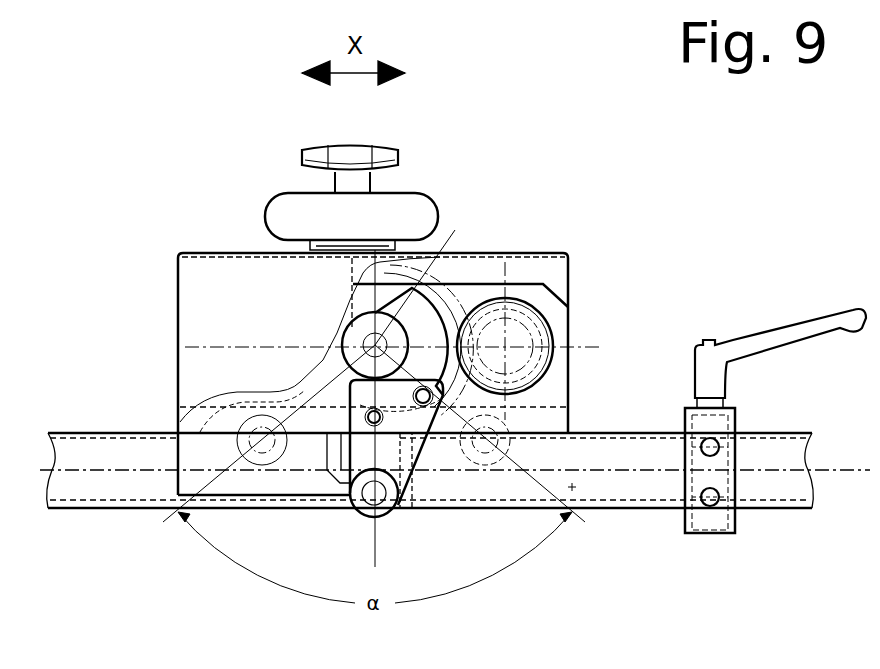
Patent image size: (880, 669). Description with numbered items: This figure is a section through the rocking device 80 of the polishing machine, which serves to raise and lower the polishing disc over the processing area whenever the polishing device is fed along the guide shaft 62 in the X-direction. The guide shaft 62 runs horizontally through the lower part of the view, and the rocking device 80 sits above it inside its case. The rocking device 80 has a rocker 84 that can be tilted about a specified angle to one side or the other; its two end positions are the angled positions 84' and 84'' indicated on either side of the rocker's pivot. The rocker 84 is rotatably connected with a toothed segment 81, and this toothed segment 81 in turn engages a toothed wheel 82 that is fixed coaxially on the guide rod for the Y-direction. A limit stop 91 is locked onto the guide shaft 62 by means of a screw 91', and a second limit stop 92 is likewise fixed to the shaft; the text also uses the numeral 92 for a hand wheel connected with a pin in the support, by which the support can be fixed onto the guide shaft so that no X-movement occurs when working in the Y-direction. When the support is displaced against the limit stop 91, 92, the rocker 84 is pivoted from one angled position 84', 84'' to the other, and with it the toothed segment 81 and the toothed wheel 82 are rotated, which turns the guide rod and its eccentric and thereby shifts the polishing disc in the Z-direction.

The guide shaft 62 is at (105, 480).
The rocking device 80 is at (427, 448).
The toothed segment 81 is at (382, 340).
The toothed wheel 82 is at (530, 342).
The rocker 84 is at (400, 482).
The angled position 84' is at (492, 486).
The angled position 84'' is at (262, 485).
The limit stop 91 is at (710, 518).
The screw 91' is at (780, 328).
The limit stop 92 is at (392, 157).